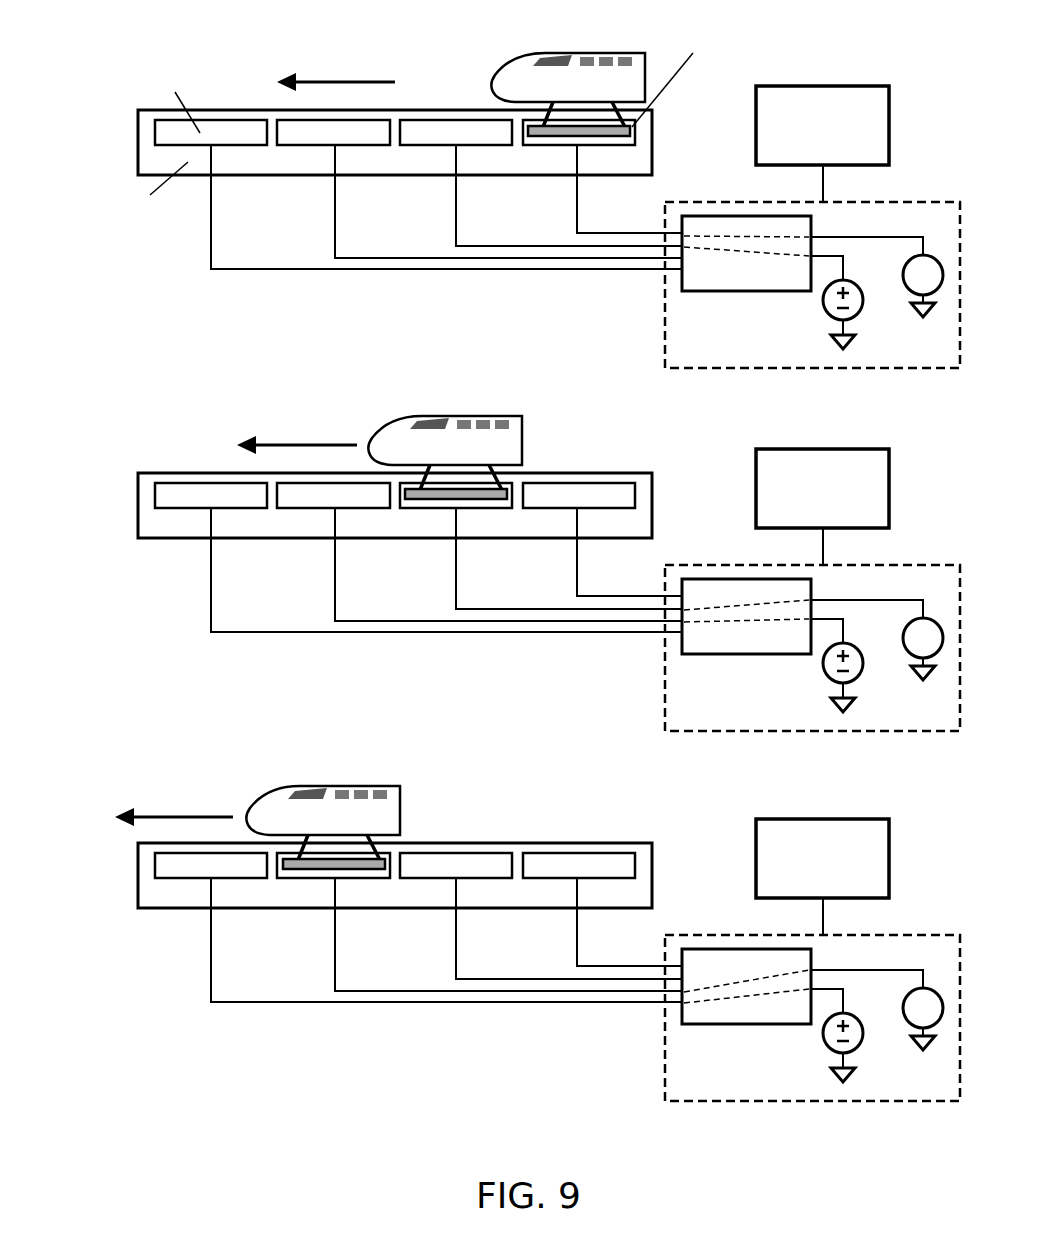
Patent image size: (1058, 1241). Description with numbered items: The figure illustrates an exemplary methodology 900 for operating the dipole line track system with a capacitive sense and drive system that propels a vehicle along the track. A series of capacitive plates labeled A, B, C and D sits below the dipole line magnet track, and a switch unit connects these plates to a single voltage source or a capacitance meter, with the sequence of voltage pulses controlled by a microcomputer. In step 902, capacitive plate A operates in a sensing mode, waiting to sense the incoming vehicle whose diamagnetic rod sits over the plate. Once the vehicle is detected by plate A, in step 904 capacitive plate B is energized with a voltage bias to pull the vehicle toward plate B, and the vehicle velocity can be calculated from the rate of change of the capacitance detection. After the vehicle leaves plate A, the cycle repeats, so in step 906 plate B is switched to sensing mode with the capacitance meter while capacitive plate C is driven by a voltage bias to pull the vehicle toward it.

The exemplary methodology 900 is at (926, 19).
The step of capacitive plate A operating in sensing mode 902 is at (114, 58).
The step of energizing capacitive plate B 904 is at (118, 449).
The step of switching capacitive plate B to sensing mode and driving capacitive plat 906 is at (121, 752).